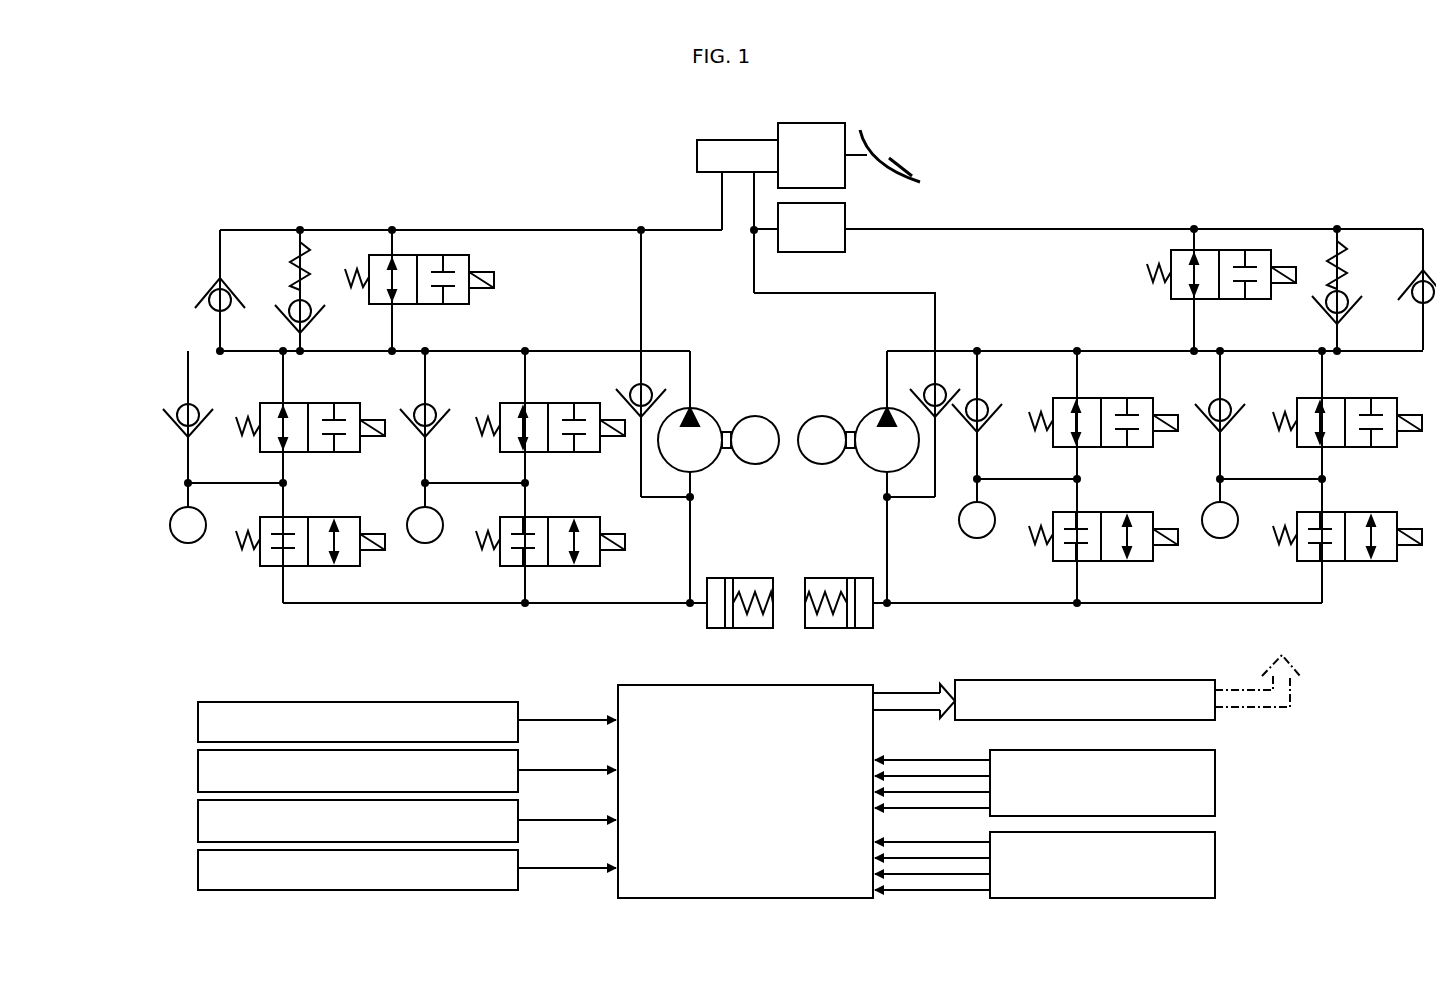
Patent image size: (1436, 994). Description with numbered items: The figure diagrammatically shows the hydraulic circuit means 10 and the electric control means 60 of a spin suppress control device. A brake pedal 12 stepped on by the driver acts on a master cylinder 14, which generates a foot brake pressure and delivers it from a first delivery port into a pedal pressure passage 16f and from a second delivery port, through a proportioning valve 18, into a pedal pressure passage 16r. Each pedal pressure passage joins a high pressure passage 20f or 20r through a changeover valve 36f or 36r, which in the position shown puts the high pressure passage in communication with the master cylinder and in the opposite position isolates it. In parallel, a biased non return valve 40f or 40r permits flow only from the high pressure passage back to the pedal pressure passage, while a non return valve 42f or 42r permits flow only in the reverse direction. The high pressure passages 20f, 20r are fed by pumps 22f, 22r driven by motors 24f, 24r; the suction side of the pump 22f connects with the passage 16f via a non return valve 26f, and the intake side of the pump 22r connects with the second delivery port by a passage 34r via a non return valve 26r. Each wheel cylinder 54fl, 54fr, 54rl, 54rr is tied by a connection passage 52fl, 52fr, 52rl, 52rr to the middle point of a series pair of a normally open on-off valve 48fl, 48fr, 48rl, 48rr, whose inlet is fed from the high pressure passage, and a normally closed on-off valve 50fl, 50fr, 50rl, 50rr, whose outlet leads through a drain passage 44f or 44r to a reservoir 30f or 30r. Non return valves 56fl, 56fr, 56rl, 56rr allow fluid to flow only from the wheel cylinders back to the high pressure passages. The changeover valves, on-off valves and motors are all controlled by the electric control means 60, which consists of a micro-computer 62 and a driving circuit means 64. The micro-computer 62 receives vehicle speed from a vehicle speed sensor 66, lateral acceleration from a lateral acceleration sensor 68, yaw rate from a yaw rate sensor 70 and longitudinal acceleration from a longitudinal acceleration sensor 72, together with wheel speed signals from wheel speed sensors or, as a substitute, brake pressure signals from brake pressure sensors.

The hydraulic circuit means 10 is at (215, 187).
The brake pedal 12 is at (910, 167).
The master cylinder 14 is at (705, 142).
The pedal pressure passage 16f is at (500, 230).
The pedal pressure passage 16r is at (1045, 229).
The proportioning valve 18 is at (828, 252).
The high pressure passage 20f is at (418, 351).
The high pressure passage 20r is at (1128, 351).
The pump 22f is at (702, 470).
The pump 22r is at (872, 466).
The motor 24f is at (757, 416).
The motor 24r is at (826, 416).
The non return valve 26f is at (655, 383).
The non return valve 26r is at (925, 385).
The reservoir 30f is at (743, 578).
The reservoir 30r is at (828, 578).
The rear supply passage 34r is at (940, 300).
The changeover valve 36f is at (413, 255).
The changeover valve 36r is at (1238, 250).
The biased non return valve 40f is at (286, 311).
The biased one way valve 40r is at (1348, 312).
The non return valve 42f is at (206, 296).
The non return valve 42r is at (1407, 290).
The drain passage 44f is at (410, 603).
The drain passage 44r is at (1098, 603).
The normally open type on-off valve 48fl is at (298, 403).
The normally open type on-off valve 48fr is at (540, 403).
The normally open type on-off valve 48rl is at (1092, 398).
The normally open type on-off valve 48rr is at (1336, 398).
The normally closed type on-off valve 50fl is at (302, 565).
The normally closed type on-off valve 50fr is at (542, 565).
The normally closed type on-off valve 50rl is at (1093, 512).
The normally closed type on-off valve 50rr is at (1340, 512).
The connection passage 52fl is at (203, 483).
The connection passage 52fr is at (443, 483).
The connection passage 52rl is at (992, 479).
The connection passage 52rr is at (1236, 479).
The wheel cylinder 54fl is at (188, 543).
The wheel cylinder 54fr is at (425, 543).
The wheel cylinder 54rl is at (977, 538).
The wheel cylinder 54rr is at (1220, 538).
The non return valve 56fl is at (178, 409).
The non return valve 56fr is at (436, 408).
The non return valve 56rl is at (988, 403).
The non return valve 56rr is at (1231, 403).
The electric control means 60 is at (1340, 714).
The micro-computer 62 is at (755, 836).
The driving circuit means 64 is at (1015, 680).
The vehicle speed sensor 66 is at (198, 724).
The lateral acceleration sensor 68 is at (198, 774).
The yaw rate sensor 70 is at (198, 823).
The longitudinal acceleration sensor 72 is at (198, 873).